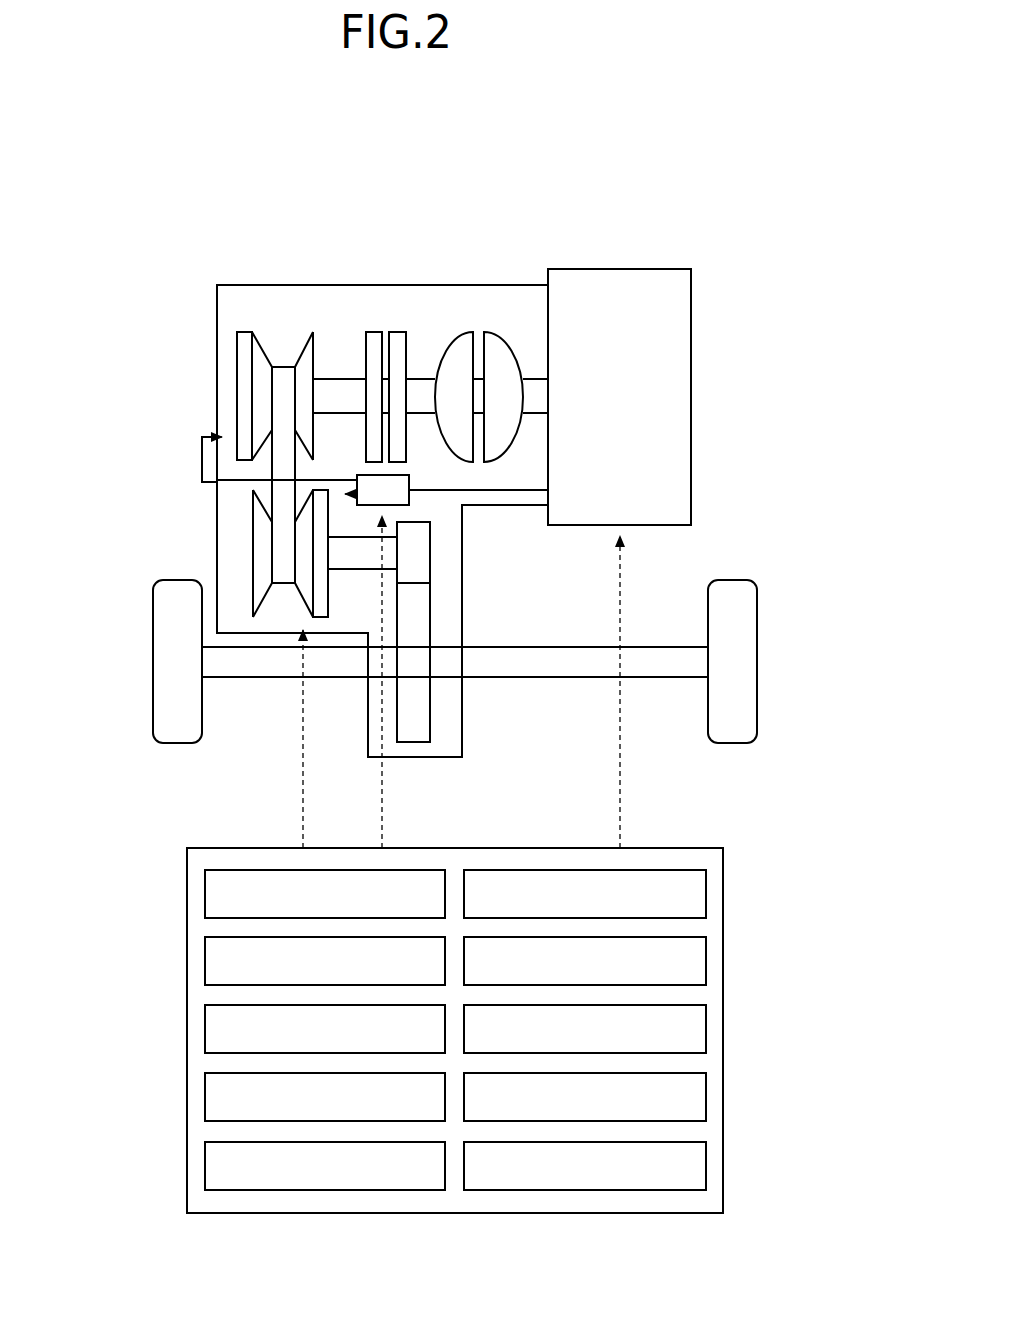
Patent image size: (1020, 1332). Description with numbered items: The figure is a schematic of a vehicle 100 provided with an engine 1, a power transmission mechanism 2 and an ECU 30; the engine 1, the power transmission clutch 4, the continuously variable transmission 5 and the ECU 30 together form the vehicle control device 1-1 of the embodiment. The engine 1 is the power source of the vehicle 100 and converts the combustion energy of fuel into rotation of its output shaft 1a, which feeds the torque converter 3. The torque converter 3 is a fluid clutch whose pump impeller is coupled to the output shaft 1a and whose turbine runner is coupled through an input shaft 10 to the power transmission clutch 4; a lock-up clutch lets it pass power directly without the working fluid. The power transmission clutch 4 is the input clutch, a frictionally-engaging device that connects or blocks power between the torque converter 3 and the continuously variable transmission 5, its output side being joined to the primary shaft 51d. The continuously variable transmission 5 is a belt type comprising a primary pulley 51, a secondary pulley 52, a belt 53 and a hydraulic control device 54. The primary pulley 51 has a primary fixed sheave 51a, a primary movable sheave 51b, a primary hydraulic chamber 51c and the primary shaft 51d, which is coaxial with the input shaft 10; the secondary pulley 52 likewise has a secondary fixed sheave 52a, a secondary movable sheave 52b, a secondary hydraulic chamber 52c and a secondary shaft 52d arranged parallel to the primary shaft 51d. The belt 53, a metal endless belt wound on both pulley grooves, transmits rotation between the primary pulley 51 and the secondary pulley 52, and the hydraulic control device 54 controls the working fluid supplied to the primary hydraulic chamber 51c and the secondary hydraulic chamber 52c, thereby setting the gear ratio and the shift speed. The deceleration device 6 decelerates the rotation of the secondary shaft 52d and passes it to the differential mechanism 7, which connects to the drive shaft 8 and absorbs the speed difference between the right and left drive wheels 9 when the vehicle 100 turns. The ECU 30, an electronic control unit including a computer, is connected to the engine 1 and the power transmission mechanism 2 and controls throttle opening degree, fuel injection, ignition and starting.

The vehicle 100 is at (106, 154).
The vehicle control device 1-1 is at (210, 200).
The engine 1 is at (630, 269).
The output shaft 1a is at (533, 378).
The power transmission mechanism 2 is at (449, 285).
The torque converter 3 is at (480, 312).
The power transmission clutch 4 is at (383, 312).
The input shaft 10 is at (421, 378).
The continuously variable transmission 5 is at (253, 297).
The primary pulley 51 is at (278, 311).
The primary fixed sheave 51a is at (298, 365).
The primary movable sheave 51b is at (260, 340).
The primary hydraulic chamber 51c is at (237, 341).
The primary shaft 51d is at (342, 378).
The belt 53 is at (297, 465).
The hydraulic control device 54 is at (409, 484).
The secondary pulley 52 is at (235, 512).
The secondary fixed sheave 52a is at (253, 552).
The secondary movable sheave 52b is at (293, 598).
The secondary hydraulic chamber 52c is at (320, 617).
The secondary shaft 52d is at (357, 570).
The deceleration device 6 is at (445, 582).
The differential mechanism 7 is at (428, 614).
The drive shaft 8 is at (671, 647).
The drive wheel 9 is at (177, 743).
The ECU 30 is at (490, 848).